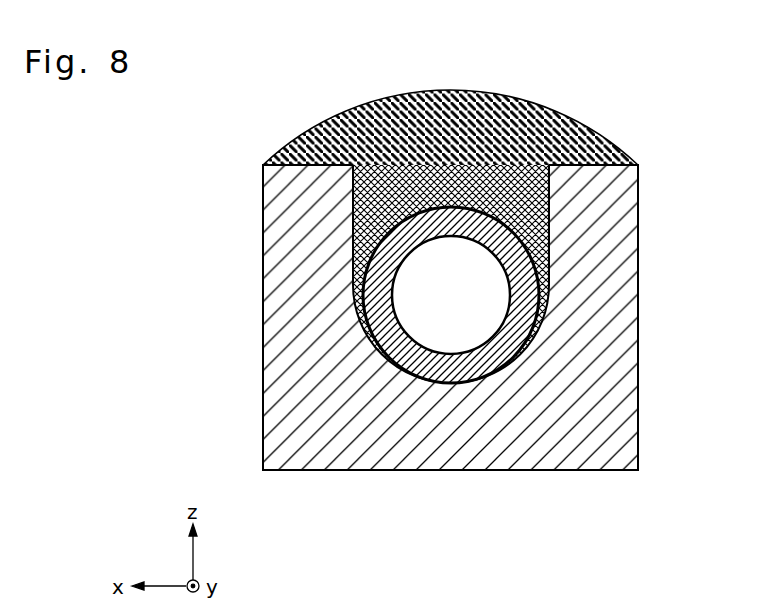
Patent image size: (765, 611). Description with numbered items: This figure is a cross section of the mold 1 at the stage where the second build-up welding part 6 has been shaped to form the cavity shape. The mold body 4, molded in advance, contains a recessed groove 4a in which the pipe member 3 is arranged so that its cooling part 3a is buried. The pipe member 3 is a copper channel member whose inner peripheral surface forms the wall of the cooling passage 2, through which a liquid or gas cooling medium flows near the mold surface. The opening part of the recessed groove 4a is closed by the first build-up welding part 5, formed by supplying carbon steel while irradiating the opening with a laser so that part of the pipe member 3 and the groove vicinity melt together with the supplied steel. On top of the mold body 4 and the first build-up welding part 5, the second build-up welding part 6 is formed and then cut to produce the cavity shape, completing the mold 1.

The mold 1 is at (456, 249).
The cooling passage 2 is at (541, 288).
The pipe member 3 is at (451, 206).
The cooling part 3a is at (450, 220).
The mold body 4 is at (236, 346).
The recessed groove 4a is at (535, 173).
The first build-up welding part 5 is at (375, 182).
The second build-up welding part 6 is at (301, 140).